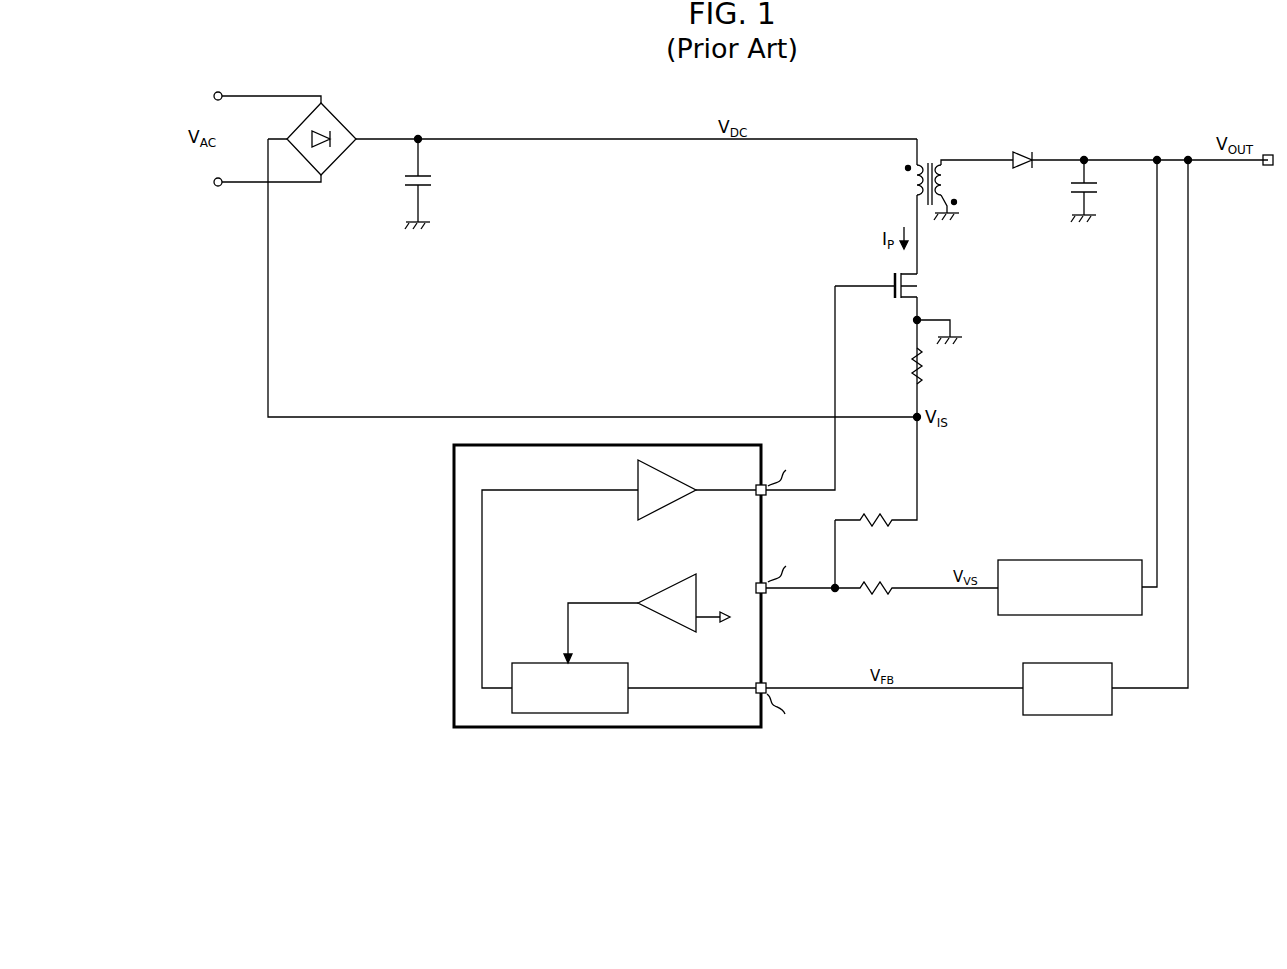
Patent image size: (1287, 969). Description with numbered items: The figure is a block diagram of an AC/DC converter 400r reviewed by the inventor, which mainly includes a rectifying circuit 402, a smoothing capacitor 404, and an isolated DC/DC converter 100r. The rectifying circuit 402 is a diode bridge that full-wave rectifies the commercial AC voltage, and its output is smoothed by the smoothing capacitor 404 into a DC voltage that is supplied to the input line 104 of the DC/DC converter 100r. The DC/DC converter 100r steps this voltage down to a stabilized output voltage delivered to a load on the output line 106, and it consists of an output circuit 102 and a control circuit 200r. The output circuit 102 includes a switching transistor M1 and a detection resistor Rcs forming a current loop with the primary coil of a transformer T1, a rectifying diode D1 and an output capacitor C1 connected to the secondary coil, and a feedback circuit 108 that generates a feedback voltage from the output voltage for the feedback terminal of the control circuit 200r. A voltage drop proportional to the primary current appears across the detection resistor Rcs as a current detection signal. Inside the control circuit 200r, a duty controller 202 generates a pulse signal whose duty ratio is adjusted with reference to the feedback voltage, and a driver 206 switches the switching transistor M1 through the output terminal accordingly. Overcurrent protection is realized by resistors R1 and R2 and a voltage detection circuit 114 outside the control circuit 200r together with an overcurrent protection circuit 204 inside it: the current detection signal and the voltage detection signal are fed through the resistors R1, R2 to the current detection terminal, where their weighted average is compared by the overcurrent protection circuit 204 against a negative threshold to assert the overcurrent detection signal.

The rectifying circuit 402 is at (338, 124).
The smoothing capacitor 404 is at (437, 183).
The input line 104 is at (844, 137).
The output line 106 is at (1107, 169).
The output circuit 102 is at (1123, 432).
The voltage detection circuit 114 is at (1068, 560).
The feedback circuit 108 is at (1068, 661).
The driver 206 is at (678, 504).
The overcurrent protection circuit 204 is at (668, 582).
The duty controller 202 is at (596, 662).
The control circuit 200r is at (632, 609).
The DC/DC converter 100r is at (1210, 770).
The AC/DC converter 400r is at (804, 840).
The transformer T1 is at (918, 161).
The rectifying diode D1 is at (1027, 151).
The output capacitor C1 is at (1101, 188).
The switching transistor M1 is at (923, 286).
The detection resistor Rcs is at (925, 370).
The resistor R1 is at (877, 514).
The resistor R2 is at (875, 597).